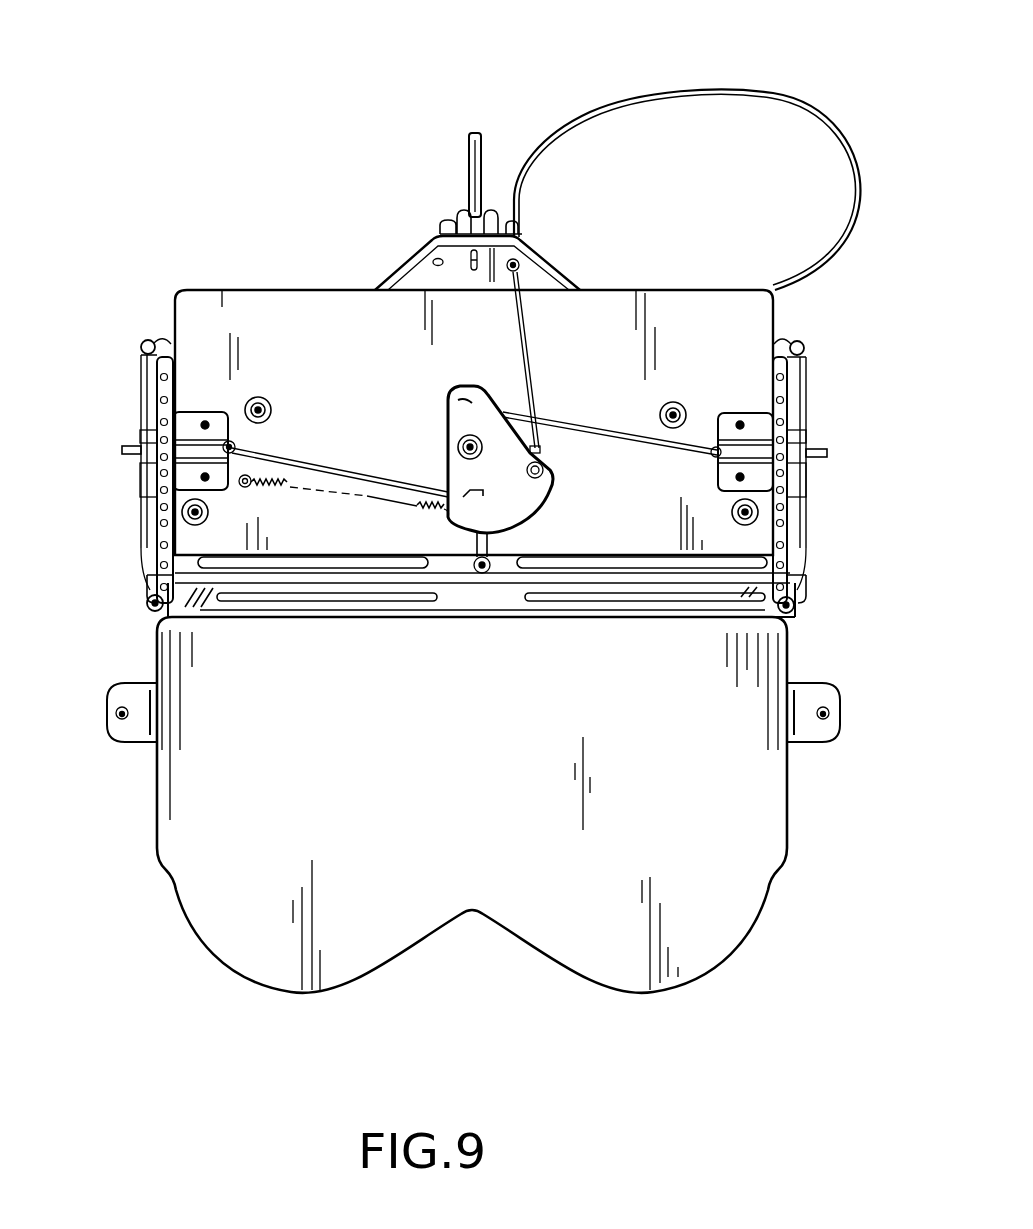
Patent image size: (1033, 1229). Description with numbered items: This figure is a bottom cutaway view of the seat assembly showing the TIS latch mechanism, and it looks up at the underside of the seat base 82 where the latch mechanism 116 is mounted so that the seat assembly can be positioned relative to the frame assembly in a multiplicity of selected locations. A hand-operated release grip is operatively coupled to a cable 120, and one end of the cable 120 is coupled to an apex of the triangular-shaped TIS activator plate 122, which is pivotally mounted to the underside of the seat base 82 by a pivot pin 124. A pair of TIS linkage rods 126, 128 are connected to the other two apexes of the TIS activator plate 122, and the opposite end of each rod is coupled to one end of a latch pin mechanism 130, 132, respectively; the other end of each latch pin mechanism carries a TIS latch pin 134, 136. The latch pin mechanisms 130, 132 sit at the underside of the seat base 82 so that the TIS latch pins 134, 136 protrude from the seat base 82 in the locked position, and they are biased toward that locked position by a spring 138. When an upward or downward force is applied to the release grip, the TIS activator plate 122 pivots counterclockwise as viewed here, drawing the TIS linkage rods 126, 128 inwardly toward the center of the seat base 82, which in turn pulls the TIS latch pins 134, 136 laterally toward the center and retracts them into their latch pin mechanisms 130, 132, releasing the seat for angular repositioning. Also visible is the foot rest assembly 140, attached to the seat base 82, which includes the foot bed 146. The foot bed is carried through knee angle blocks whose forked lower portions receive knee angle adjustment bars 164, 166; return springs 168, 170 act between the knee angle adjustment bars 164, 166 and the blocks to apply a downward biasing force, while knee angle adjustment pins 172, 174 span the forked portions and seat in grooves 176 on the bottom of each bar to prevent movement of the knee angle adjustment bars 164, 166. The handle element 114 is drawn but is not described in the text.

The seat base 82 is at (352, 356).
The handle rod 114 is at (468, 150).
The latch mechanism 116 is at (298, 180).
The cable 120 is at (729, 88).
The TIS activator plate 122 is at (527, 487).
The pivot pin 124 is at (458, 448).
The TIS linkage rod 126 is at (587, 420).
The TIS linkage rod 128 is at (310, 463).
The latch pin mechanism 130 is at (822, 403).
The latch pin mechanism 132 is at (128, 388).
The TIS latch pin 134 is at (818, 457).
The TIS latch pin 136 is at (128, 453).
The spring 138 is at (320, 490).
The foot rest assembly 140 is at (473, 838).
The foot bed 146 is at (470, 803).
The knee angle adjustment bar 164 is at (140, 347).
The knee angle adjustment bar 166 is at (805, 352).
The return spring 168 is at (795, 604).
The return spring 170 is at (147, 602).
The knee angle adjustment pin 172 is at (790, 588).
The knee angle adjustment pin 174 is at (152, 588).
The grooves 176 is at (147, 500).